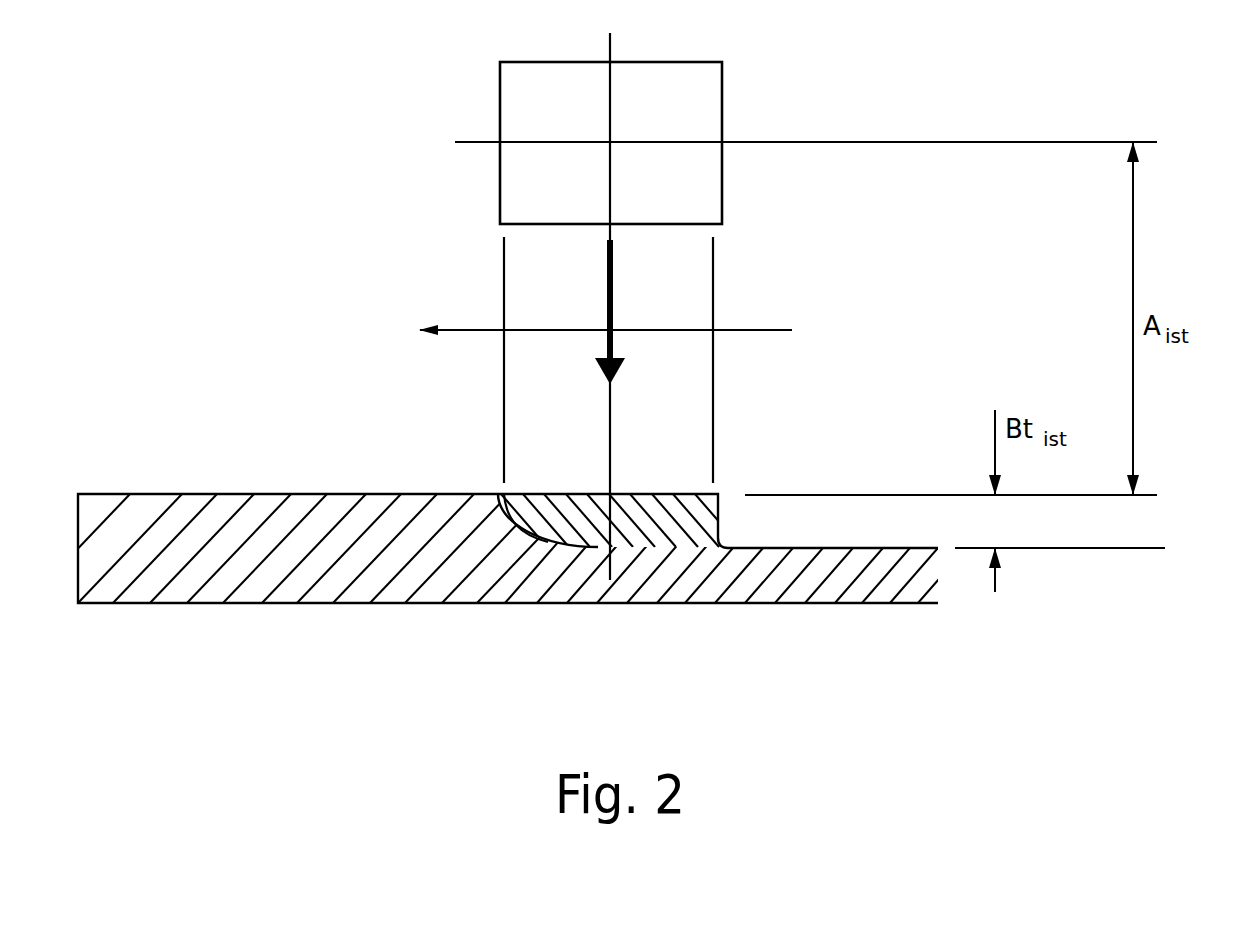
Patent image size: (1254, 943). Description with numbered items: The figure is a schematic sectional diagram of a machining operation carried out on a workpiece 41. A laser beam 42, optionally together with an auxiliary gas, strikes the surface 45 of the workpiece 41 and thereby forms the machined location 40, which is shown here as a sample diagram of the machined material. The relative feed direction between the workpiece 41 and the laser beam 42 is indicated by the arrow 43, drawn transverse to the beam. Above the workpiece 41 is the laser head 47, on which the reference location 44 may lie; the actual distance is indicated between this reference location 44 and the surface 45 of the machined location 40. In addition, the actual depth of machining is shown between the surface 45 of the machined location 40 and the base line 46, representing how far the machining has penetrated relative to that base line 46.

The machined location 40 is at (553, 513).
The workpiece 41 is at (780, 580).
The laser beam 42 is at (613, 285).
The arrow 43 is at (757, 330).
The reference location 44 is at (912, 142).
The surface 45 is at (674, 484).
The base line 46 is at (811, 536).
The laser head 47 is at (722, 107).